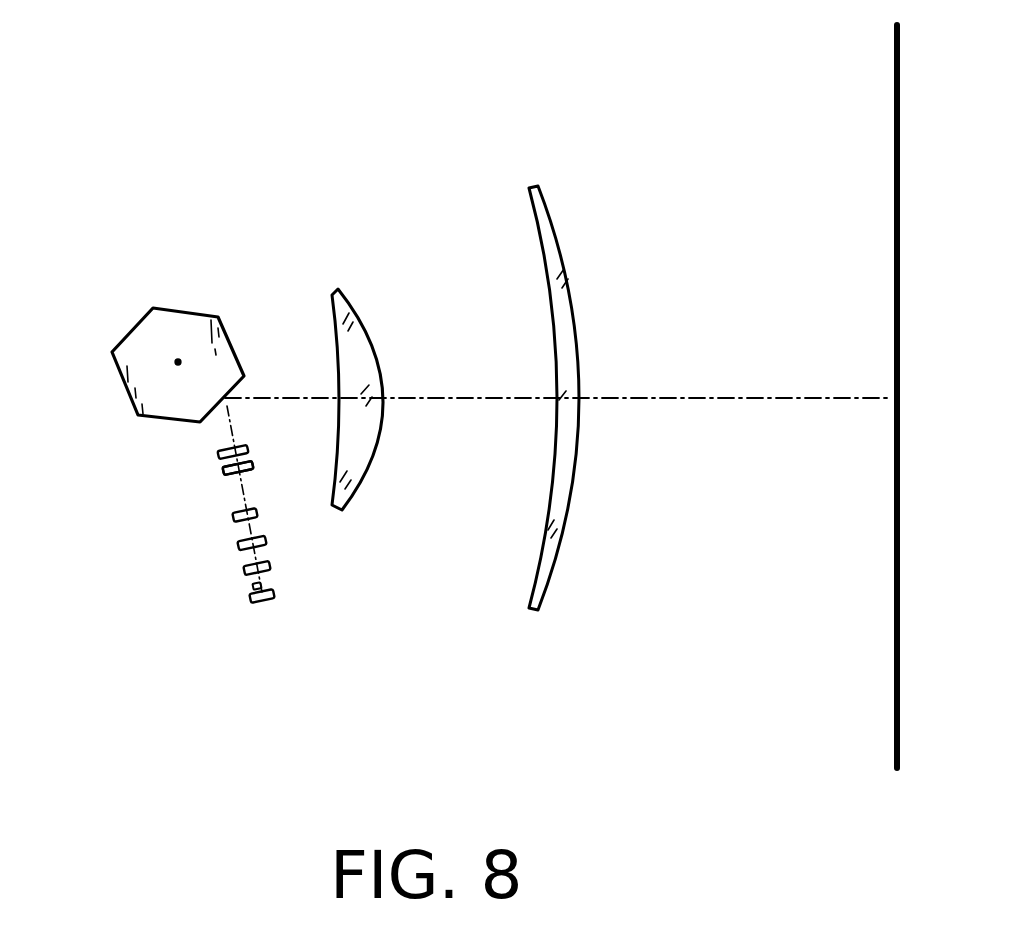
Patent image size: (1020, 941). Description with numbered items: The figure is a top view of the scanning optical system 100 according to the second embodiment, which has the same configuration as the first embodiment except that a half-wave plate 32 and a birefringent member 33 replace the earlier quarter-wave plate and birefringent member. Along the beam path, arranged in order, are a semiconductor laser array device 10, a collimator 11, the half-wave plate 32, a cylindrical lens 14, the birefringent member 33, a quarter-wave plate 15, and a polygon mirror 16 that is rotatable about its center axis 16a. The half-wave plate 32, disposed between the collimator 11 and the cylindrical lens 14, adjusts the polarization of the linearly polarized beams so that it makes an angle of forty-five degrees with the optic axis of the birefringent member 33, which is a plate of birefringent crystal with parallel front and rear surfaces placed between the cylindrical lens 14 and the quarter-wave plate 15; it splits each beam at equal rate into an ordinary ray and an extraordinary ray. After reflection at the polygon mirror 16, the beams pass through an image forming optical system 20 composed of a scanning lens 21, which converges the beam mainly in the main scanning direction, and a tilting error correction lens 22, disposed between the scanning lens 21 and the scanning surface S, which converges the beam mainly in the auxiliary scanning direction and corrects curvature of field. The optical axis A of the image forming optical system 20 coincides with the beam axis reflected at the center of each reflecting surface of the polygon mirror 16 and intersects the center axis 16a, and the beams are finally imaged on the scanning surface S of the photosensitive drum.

The scanning optical system 100 is at (560, 78).
The image forming optical system 20 is at (598, 141).
The scanning lens 21 is at (358, 312).
The tilting error correction lens 22 is at (558, 238).
The polygon mirror 16 is at (176, 308).
The center axis 16a is at (178, 363).
The quarter-wave plate 15 is at (248, 450).
The birefringent member 33 is at (221, 468).
The cylindrical lens 14 is at (258, 514).
The half-wave plate 32 is at (238, 542).
The collimator 11 is at (311, 572).
The semiconductor laser array device 10 is at (252, 596).
The optical axis A is at (694, 396).
The scanning surface S is at (897, 640).